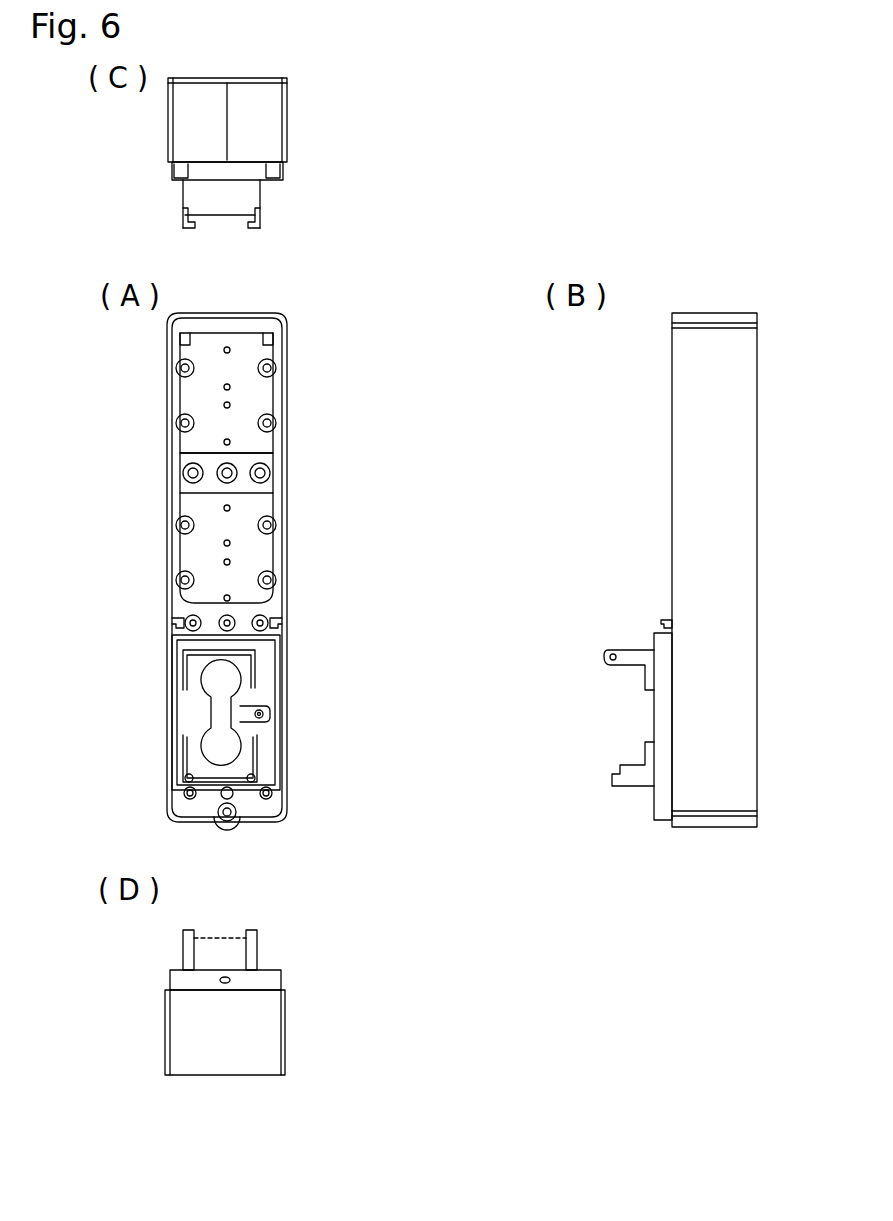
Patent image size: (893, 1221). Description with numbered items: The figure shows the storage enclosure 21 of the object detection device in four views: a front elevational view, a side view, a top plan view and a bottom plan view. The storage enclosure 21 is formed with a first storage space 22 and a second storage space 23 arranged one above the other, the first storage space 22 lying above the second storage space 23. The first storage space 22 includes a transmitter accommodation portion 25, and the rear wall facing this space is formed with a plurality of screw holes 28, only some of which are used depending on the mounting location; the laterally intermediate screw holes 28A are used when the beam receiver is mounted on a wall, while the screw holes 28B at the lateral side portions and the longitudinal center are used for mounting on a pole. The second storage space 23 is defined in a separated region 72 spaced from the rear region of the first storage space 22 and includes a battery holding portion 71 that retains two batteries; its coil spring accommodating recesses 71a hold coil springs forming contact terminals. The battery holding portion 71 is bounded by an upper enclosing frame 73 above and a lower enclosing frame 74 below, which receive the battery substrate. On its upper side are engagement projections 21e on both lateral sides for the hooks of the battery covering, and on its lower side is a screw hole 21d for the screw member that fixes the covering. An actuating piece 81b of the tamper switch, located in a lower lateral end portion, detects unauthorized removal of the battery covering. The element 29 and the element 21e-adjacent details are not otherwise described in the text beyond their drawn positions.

The storage enclosure 21 is at (266, 122).
The first storage space 22 is at (205, 350).
The transmitter accommodation portion 25 is at (178, 366).
The screw 29 is at (276, 366).
The screw holes 28 is at (176, 370).
The screw holes for wall mounting 28A is at (237, 470).
The screw holes for pole mounting 28B is at (322, 530).
The engagement projections 21e is at (175, 618).
The upper enclosing frame 73 is at (248, 198).
The battery holding portion 71 is at (212, 712).
The coil spring accommodating recesses 71a is at (216, 680).
The second storage space 23 is at (268, 692).
The separated region 72 is at (258, 730).
The lower enclosing frame 74 is at (258, 760).
The actuating piece 81b is at (270, 795).
The screw hole 21d is at (229, 818).